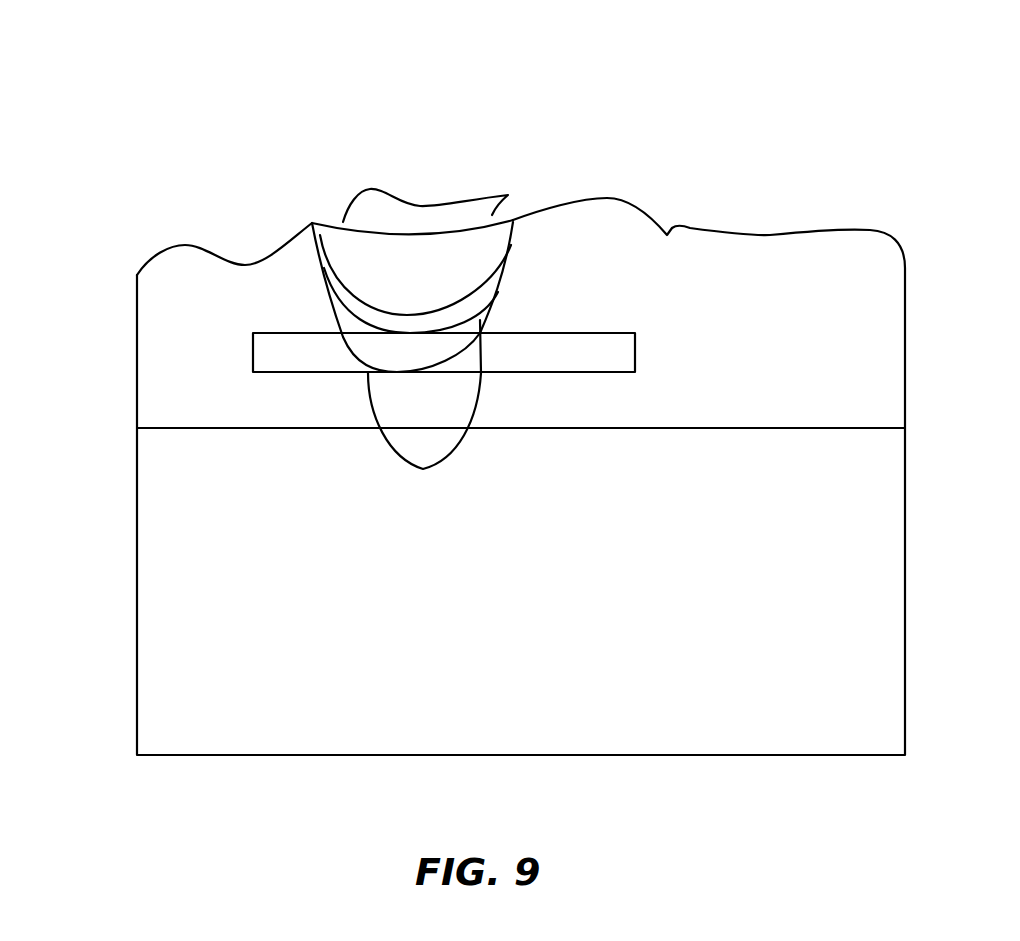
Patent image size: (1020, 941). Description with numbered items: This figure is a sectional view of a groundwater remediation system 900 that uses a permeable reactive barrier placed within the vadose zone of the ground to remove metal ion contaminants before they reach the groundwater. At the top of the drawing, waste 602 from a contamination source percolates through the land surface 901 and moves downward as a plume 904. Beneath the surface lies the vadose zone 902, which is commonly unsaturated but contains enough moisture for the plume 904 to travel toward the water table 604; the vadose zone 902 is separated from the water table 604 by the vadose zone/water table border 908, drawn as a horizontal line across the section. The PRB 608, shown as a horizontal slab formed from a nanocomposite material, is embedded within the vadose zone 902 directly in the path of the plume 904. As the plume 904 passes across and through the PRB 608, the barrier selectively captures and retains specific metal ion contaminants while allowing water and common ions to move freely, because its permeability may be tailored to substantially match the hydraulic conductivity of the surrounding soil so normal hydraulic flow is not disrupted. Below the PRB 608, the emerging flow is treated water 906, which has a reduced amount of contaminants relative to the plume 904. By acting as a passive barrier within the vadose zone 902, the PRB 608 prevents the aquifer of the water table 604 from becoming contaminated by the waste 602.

The groundwater remediation system 900 is at (402, 119).
The land surface 901 is at (667, 228).
The vadose zone 902 is at (213, 290).
The waste 602 is at (413, 215).
The plume 904 is at (370, 262).
The PRB 608 is at (283, 352).
The treated water 906 is at (410, 408).
The vadose zone/water table border 908 is at (223, 428).
The water table 604 is at (350, 558).